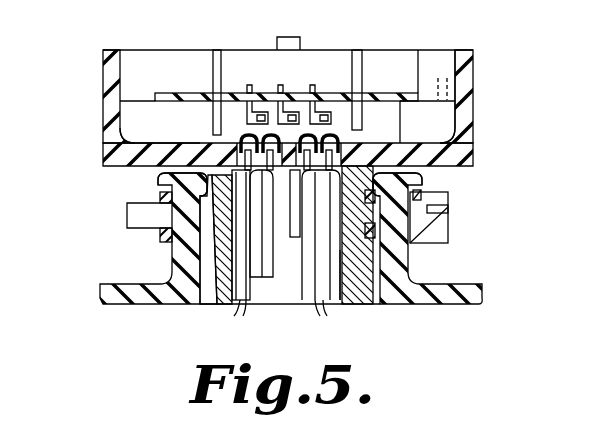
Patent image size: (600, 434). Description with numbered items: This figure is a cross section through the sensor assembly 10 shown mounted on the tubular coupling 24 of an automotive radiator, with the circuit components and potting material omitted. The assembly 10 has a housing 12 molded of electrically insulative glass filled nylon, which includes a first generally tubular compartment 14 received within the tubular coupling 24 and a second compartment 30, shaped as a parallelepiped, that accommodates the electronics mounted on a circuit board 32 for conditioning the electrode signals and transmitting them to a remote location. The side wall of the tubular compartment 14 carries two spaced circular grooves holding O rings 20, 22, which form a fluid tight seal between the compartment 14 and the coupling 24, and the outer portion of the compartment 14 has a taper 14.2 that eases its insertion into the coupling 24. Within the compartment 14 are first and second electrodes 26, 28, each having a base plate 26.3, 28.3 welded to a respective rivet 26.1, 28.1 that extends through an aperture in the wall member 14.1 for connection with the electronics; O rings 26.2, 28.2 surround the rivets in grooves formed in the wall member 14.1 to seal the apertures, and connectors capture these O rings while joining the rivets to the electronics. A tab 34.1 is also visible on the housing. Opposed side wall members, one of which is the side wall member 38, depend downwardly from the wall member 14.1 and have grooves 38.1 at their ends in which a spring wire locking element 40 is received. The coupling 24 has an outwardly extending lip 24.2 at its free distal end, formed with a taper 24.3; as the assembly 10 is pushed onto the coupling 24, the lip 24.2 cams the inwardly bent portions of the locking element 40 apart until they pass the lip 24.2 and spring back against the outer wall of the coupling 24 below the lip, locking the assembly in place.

The sensor assembly 10 is at (121, 45).
The housing 12 is at (472, 147).
The first generally tubular compartment 14 is at (240, 300).
The wall member 14.1 is at (162, 150).
The taper 14.2 is at (343, 300).
The O ring 20 is at (175, 210).
The O ring 22 is at (408, 255).
The tubular coupling 24 is at (173, 253).
The outwardly extending lip 24.2 is at (422, 184).
The taper 24.3 is at (165, 180).
The first electrode 26 is at (238, 304).
The rivet 26.1 is at (243, 143).
The O ring 26.2 is at (240, 147).
The base plate 26.3 is at (238, 310).
The second electrode 28 is at (333, 302).
The rivet 28.1 is at (330, 130).
The O ring 28.2 is at (337, 146).
The base plate 28.3 is at (335, 305).
The second compartment 30 is at (443, 62).
The circuit board 32 is at (417, 95).
The latch tab 34.1 is at (303, 40).
The side wall member 38 is at (427, 234).
The groove 38.1 is at (130, 206).
The spring wire locking element 40 is at (448, 210).